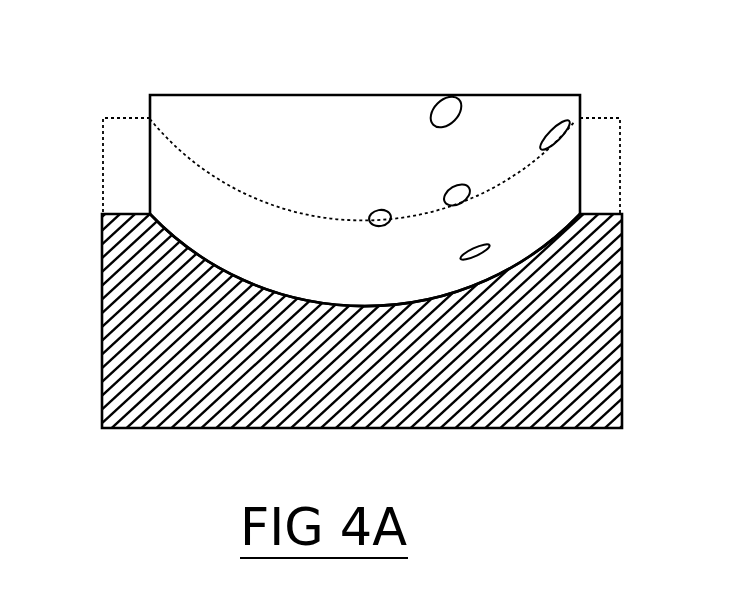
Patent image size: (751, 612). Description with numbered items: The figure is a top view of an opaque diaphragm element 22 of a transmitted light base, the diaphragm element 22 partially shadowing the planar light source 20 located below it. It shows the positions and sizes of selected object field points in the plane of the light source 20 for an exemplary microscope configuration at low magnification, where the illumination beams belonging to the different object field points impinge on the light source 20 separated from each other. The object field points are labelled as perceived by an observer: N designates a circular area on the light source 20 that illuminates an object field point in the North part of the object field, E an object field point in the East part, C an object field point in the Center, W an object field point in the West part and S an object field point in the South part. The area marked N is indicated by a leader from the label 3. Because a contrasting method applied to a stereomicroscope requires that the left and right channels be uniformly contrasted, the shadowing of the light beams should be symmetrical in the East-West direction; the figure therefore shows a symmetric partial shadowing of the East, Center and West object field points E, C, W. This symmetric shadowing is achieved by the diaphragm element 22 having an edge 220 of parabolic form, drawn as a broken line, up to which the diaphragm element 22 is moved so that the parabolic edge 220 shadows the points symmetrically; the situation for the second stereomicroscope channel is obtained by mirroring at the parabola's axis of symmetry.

The planar light source 20 is at (197, 95).
The diaphragm element 22 is at (621, 416).
The parabolic edge 220 is at (252, 287).
The marker region (north position) 3 is at (443, 116).
The North object field point N is at (414, 117).
The East object field point E is at (545, 132).
The Center object field point C is at (448, 187).
The West object field point W is at (365, 204).
The South object field point S is at (461, 261).